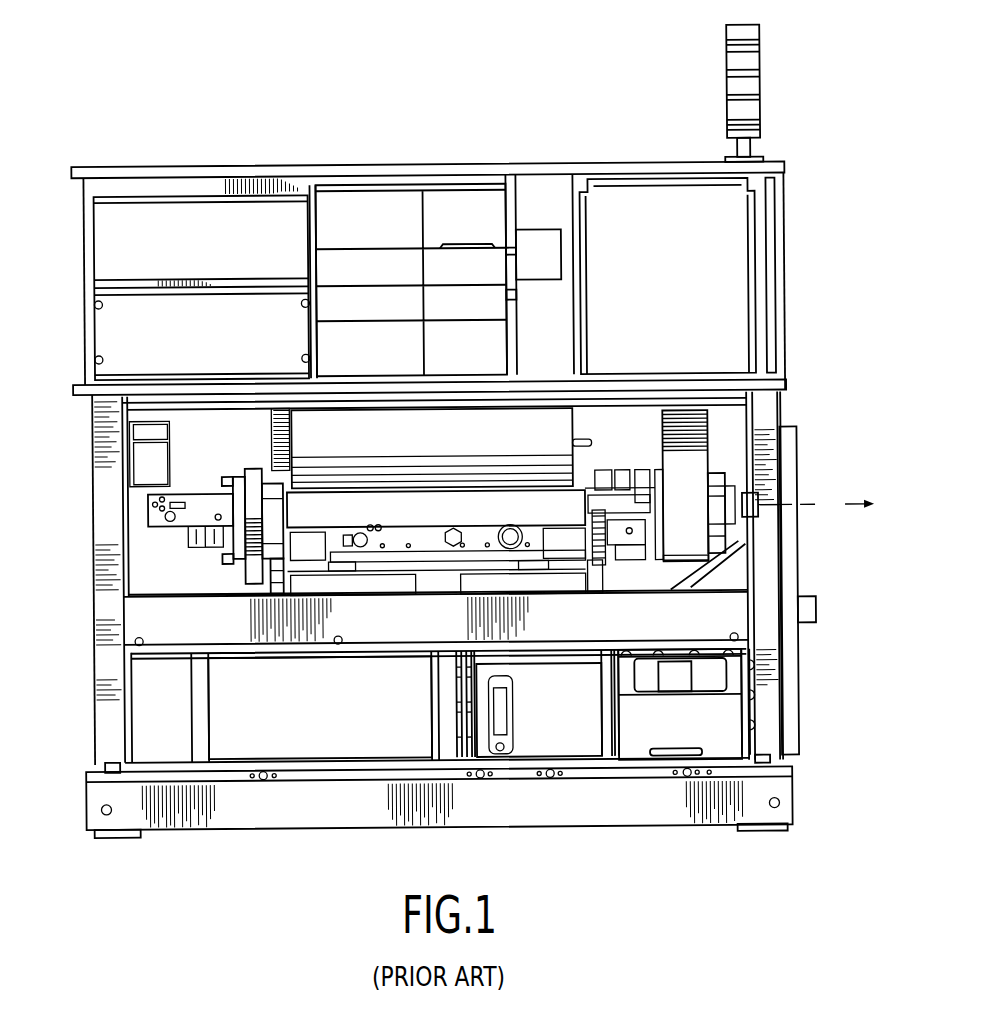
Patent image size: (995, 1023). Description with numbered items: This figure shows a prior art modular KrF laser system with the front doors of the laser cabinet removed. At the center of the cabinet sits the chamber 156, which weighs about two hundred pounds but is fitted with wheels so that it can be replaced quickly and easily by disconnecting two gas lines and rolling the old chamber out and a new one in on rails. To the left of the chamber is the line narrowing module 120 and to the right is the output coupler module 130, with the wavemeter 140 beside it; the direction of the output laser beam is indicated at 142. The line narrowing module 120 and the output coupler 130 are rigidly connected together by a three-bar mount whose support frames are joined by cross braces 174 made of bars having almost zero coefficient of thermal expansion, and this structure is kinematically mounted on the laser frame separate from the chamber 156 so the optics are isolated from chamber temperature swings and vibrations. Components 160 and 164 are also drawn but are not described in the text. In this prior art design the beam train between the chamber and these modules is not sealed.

The line narrowing module 120 is at (172, 536).
The output coupler module 130 is at (643, 461).
The wavemeter 140 is at (712, 470).
The direction of the output laser beam 142 is at (828, 511).
The chamber 156 is at (342, 525).
The drive shaft 160 is at (262, 573).
The drive belt 164 is at (598, 590).
The cross braces 174 is at (272, 472).